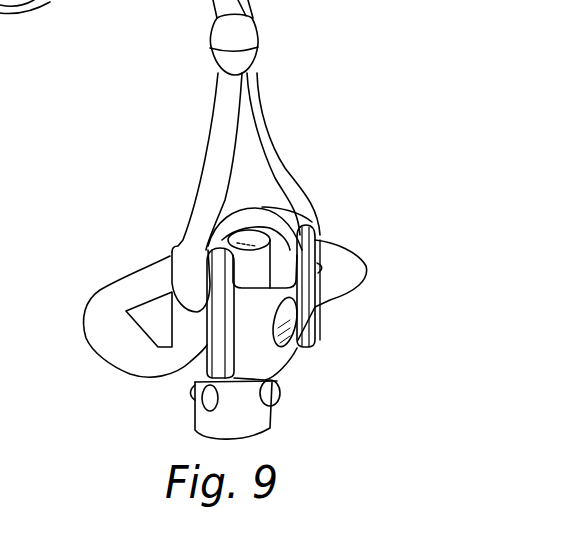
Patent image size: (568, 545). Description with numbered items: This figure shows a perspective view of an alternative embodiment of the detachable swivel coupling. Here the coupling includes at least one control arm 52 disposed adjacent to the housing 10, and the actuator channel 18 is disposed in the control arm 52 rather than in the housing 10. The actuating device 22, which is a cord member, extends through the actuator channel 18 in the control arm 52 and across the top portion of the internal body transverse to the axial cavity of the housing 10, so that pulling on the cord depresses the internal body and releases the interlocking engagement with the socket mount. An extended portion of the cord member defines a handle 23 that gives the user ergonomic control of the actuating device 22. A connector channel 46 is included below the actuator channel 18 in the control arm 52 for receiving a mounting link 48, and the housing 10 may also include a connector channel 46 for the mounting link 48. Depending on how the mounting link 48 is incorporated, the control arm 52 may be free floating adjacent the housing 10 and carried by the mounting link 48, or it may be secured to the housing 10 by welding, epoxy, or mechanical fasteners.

The housing 10 is at (267, 357).
The actuator channel 18 is at (200, 308).
The actuating device 22 is at (238, 218).
The handle 23 is at (240, 3).
The connector channel 46 is at (196, 325).
The mounting link 48 is at (124, 283).
The control arm 52 is at (203, 323).